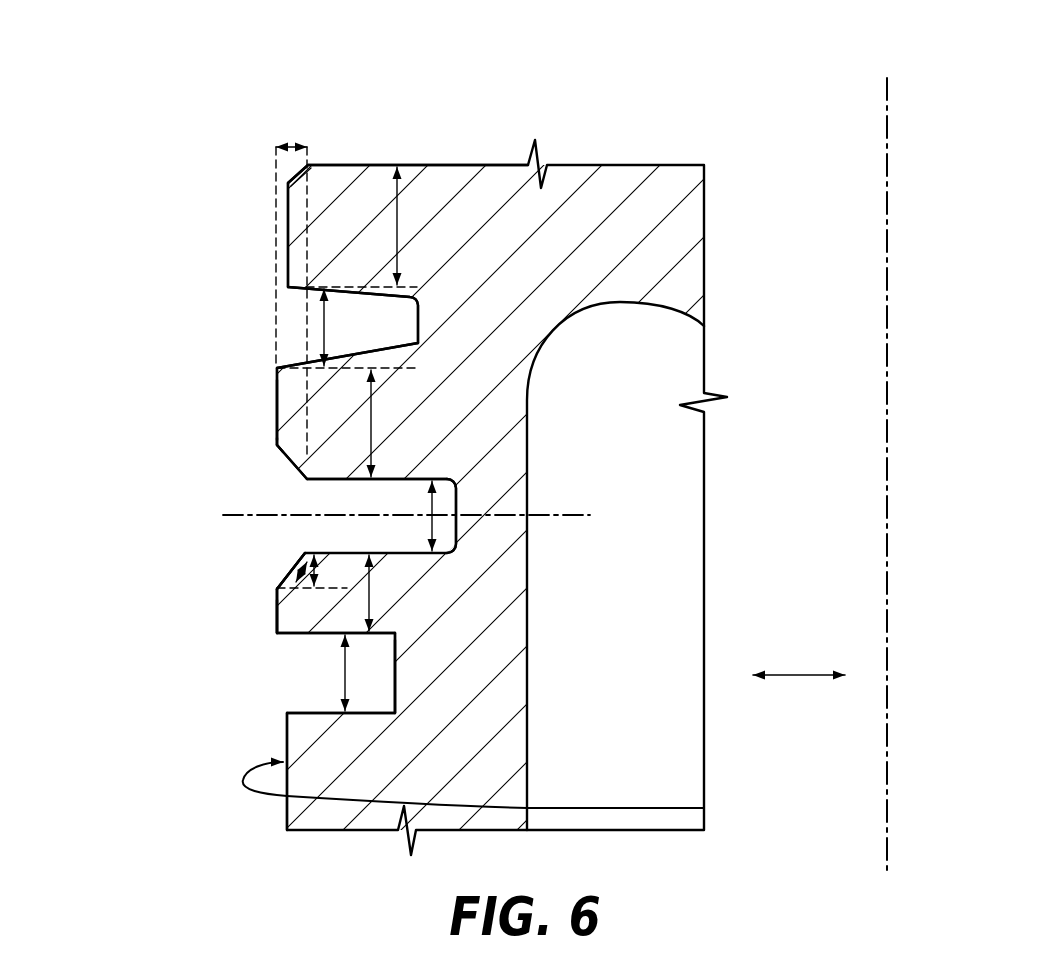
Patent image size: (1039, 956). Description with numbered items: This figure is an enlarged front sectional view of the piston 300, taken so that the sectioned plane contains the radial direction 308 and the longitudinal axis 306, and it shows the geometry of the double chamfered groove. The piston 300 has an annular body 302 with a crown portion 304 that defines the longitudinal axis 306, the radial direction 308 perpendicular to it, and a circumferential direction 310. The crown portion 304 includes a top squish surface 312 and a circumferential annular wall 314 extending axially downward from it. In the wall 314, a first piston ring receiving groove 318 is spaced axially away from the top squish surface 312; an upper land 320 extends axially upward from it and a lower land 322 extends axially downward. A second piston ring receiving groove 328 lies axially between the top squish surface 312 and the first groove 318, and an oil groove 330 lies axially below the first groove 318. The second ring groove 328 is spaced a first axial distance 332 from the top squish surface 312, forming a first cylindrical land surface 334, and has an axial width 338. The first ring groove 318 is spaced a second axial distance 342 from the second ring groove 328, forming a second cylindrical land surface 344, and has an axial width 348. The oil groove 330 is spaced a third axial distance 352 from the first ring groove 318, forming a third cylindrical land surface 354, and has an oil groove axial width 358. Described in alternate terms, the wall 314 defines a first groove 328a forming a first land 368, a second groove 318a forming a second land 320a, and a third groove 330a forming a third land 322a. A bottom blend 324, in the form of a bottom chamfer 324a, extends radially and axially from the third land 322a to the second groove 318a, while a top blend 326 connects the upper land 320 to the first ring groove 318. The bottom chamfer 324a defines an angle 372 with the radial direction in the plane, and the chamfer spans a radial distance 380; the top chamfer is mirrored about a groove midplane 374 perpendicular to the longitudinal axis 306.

The piston 300 is at (778, 88).
The annular body 302 is at (708, 285).
The crown portion 304 is at (276, 195).
The longitudinal axis 306 is at (885, 400).
The radial direction 308 is at (800, 677).
The circumferential direction 310 is at (268, 797).
The top squish surface 312 is at (383, 165).
The circumferential annular wall 314 is at (490, 437).
The first piston ring receiving groove 318 is at (332, 492).
The second groove 318a is at (392, 505).
The upper land 320 is at (275, 385).
The second land 320a is at (277, 445).
The lower land 322 is at (272, 608).
The third land 322a is at (275, 625).
The bottom blend 324 is at (300, 576).
The bottom chamfer 324a is at (298, 583).
The top blend 326 is at (310, 467).
The second piston ring receiving groove 328 is at (305, 323).
The first groove 328a is at (408, 340).
The oil groove 330 is at (302, 690).
The third groove 330a is at (377, 700).
The first axial distance 332 is at (400, 225).
The first cylindrical land surface 334 is at (288, 190).
The second piston ring receiving groove axial width 338 is at (325, 330).
The second axial distance 342 is at (371, 420).
The second cylindrical land surface 344 is at (277, 405).
The first piston ring receiving groove axial width 348 is at (440, 503).
The third axial distance 352 is at (369, 600).
The third cylindrical land surface 354 is at (277, 600).
The oil groove axial width 358 is at (345, 672).
The first land 368 is at (288, 240).
The angle 372 is at (316, 575).
The groove midplane 374 is at (465, 517).
The radial distance 380 is at (290, 147).